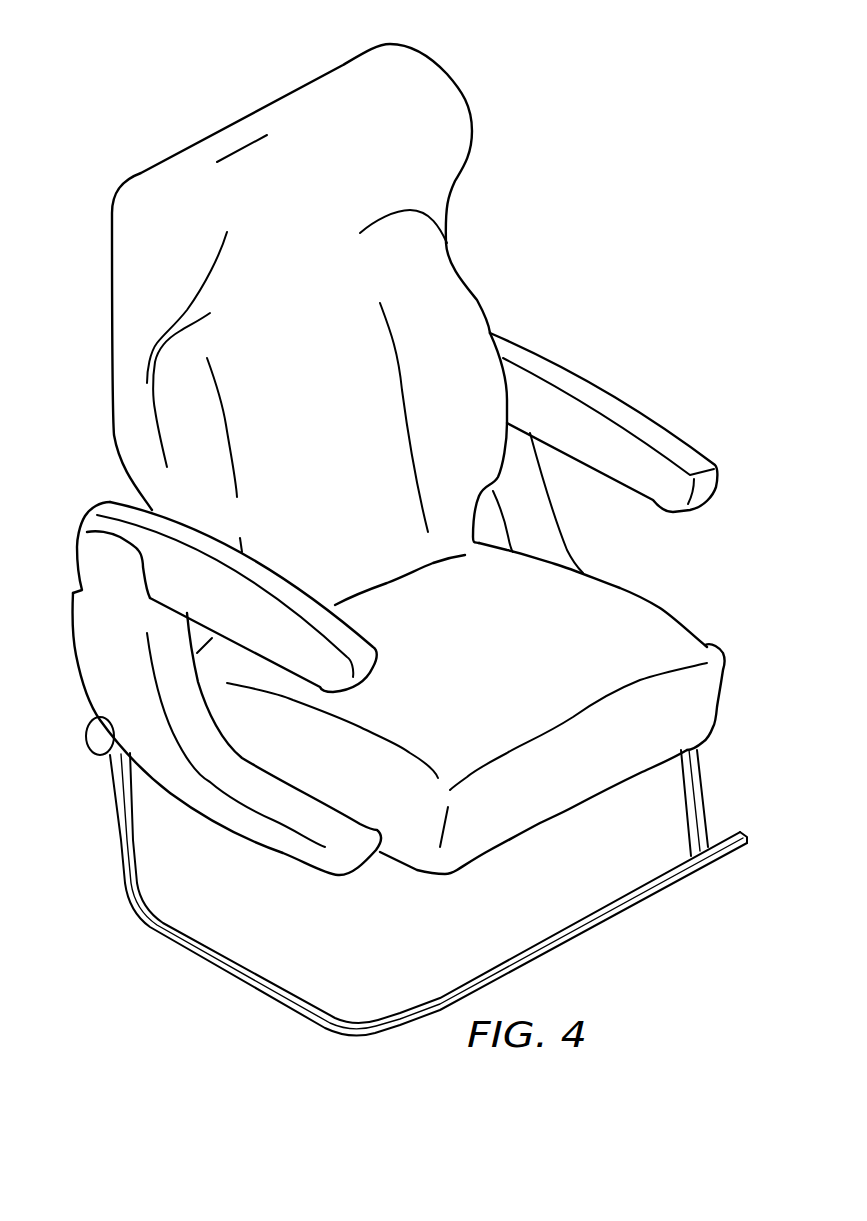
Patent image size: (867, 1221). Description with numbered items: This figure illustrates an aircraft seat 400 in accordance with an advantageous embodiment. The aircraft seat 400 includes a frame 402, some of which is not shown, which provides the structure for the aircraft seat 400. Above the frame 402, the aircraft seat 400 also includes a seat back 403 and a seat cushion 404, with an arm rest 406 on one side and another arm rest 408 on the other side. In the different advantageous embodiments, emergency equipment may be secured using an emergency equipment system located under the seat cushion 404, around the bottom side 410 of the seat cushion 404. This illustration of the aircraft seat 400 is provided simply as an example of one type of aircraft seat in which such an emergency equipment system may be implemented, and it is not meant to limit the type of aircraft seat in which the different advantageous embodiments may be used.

The aircraft seat 400 is at (206, 66).
The frame 402 is at (118, 850).
The seat back 403 is at (450, 283).
The seat cushion 404 is at (640, 618).
The arm rest 406 is at (303, 603).
The arm rest 408 is at (645, 421).
The bottom side 410 is at (507, 845).